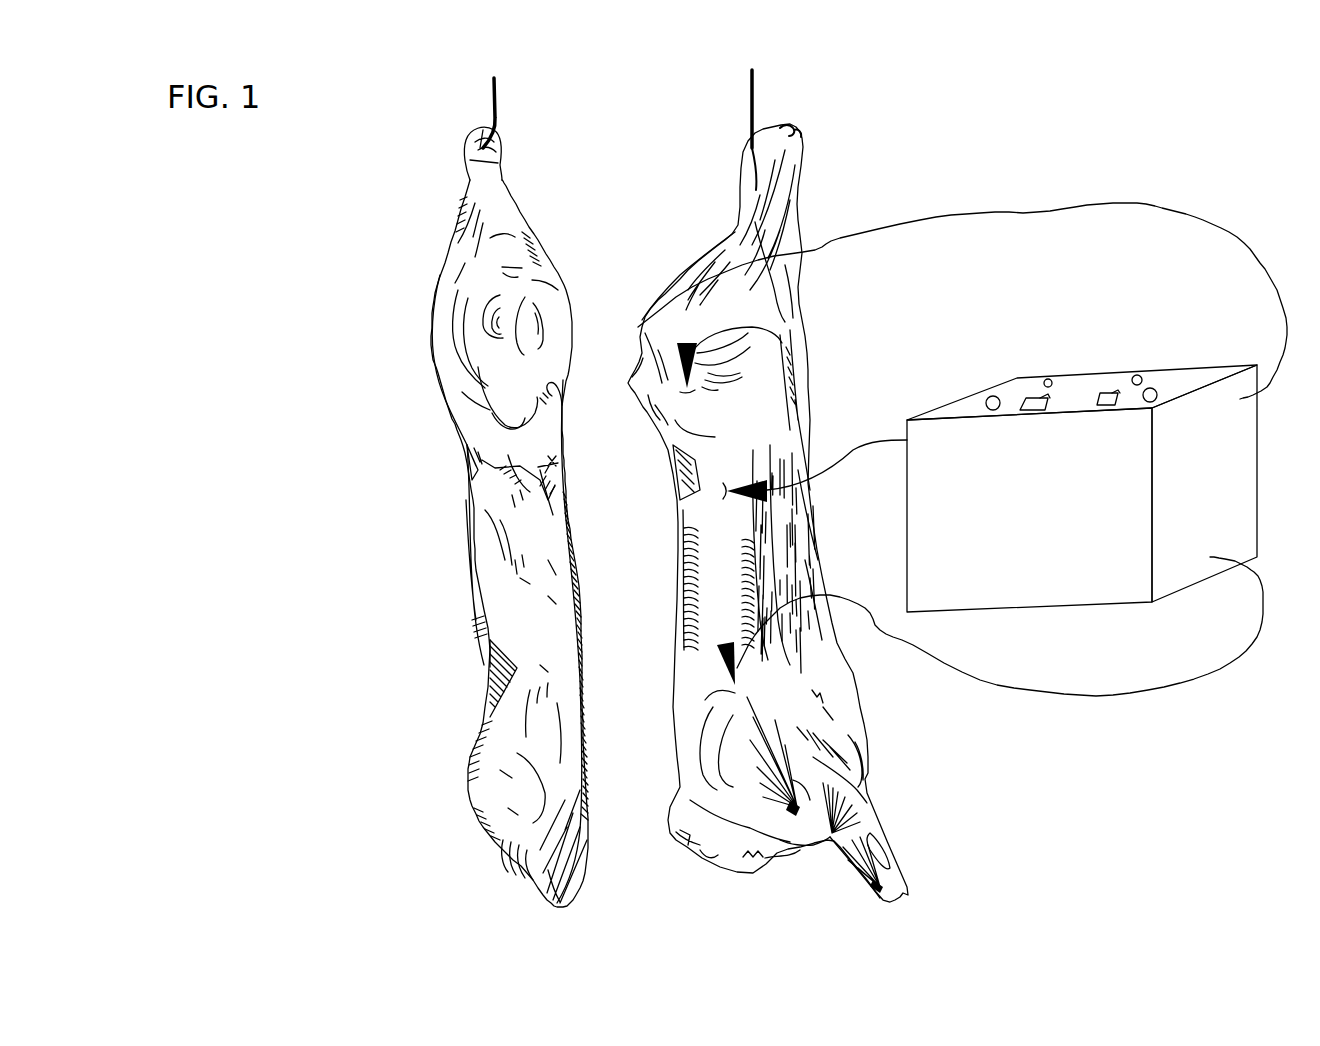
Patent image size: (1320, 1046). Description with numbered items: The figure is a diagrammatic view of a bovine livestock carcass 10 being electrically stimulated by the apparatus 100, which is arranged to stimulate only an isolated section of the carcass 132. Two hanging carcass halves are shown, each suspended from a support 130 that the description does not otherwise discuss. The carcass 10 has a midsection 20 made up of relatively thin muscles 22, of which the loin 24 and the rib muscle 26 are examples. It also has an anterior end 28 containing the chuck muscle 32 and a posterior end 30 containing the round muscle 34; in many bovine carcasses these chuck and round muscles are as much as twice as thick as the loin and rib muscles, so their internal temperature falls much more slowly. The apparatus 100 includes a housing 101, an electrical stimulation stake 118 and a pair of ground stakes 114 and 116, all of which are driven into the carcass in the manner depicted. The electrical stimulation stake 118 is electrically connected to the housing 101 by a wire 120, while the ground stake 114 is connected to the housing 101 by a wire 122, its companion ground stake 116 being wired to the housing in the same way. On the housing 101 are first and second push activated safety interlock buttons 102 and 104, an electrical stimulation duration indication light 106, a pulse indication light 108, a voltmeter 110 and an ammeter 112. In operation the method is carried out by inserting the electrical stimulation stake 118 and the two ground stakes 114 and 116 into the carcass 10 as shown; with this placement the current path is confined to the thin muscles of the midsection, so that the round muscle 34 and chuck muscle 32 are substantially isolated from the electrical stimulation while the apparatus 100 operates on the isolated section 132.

The livestock carcass 10 is at (460, 790).
The midsection 20 is at (558, 557).
The thin muscles 22 is at (552, 598).
The loin 24 is at (547, 507).
The rib muscle 26 is at (545, 667).
The anterior end 28 is at (513, 810).
The posterior end 30 is at (416, 347).
The chuck muscle 32 is at (507, 773).
The round muscle 34 is at (467, 373).
The apparatus 100 is at (1076, 421).
The housing 101 is at (1082, 488).
The first push activated safety interlock button 102 is at (988, 398).
The second push activated safety interlock button 104 is at (1157, 390).
The electrical stimulation duration indication light 106 is at (1048, 378).
The indicator 108 is at (1139, 375).
The voltmeter 110 is at (1020, 408).
The ammeter 112 is at (1100, 403).
The ground stake 114 is at (668, 343).
The ground stake 116 is at (750, 690).
The electrical stimulation stake 118 is at (735, 488).
The wire 120 is at (837, 446).
The wire 122 is at (838, 240).
The hook 130 is at (500, 100).
The isolated section of the carcass 132 is at (527, 580).